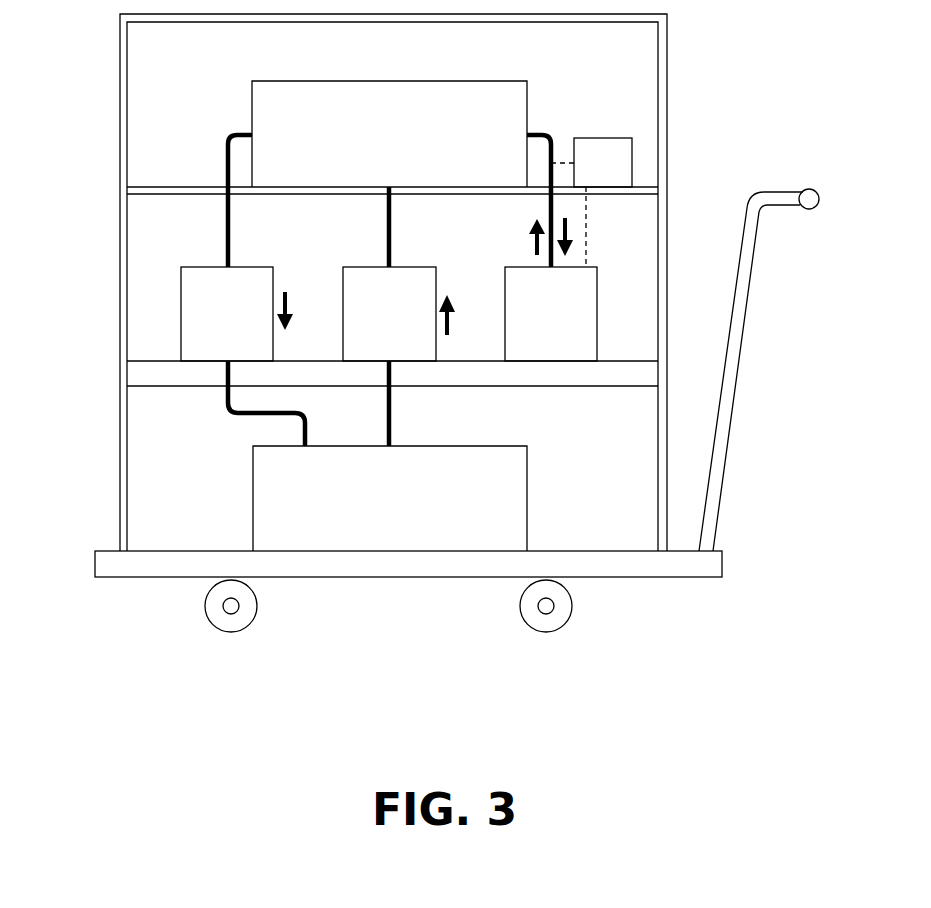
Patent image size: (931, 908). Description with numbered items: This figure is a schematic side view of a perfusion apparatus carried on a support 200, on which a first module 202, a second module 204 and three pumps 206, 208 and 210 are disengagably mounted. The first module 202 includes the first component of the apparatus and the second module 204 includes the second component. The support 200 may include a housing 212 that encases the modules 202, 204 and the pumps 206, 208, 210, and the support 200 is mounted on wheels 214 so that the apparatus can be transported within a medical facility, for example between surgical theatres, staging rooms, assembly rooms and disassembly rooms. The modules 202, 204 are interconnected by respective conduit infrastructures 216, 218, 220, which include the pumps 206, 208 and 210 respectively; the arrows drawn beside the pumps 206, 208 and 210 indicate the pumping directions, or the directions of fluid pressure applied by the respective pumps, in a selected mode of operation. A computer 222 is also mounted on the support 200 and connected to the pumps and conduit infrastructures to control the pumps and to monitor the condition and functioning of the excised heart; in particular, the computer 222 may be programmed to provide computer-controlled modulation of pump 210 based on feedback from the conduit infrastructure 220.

The support 200 is at (103, 550).
The first module 202 is at (411, 150).
The second module 204 is at (412, 512).
The pump 206 is at (248, 330).
The pump 208 is at (410, 330).
The pump 210 is at (572, 330).
The housing 212 is at (120, 228).
The wheels 214 is at (235, 633).
The conduit infrastructure 216 is at (225, 160).
The conduit infrastructure 218 is at (392, 233).
The conduit infrastructure 220 is at (548, 135).
The computer 222 is at (624, 180).